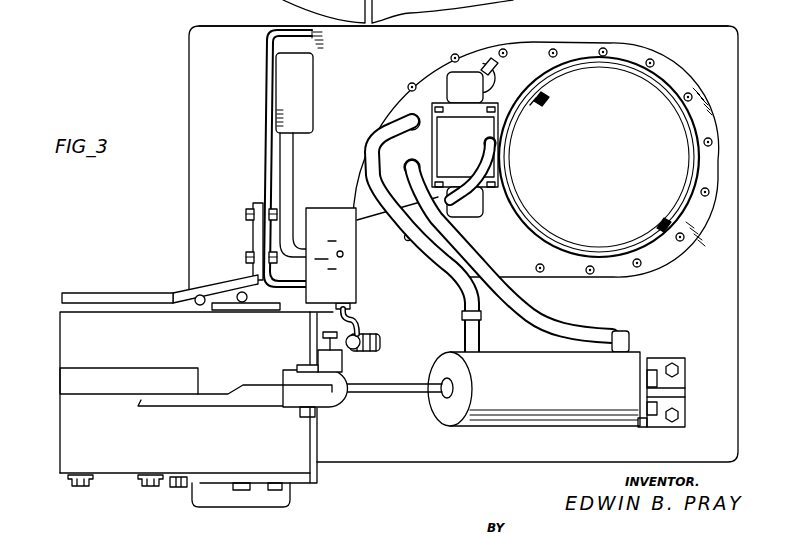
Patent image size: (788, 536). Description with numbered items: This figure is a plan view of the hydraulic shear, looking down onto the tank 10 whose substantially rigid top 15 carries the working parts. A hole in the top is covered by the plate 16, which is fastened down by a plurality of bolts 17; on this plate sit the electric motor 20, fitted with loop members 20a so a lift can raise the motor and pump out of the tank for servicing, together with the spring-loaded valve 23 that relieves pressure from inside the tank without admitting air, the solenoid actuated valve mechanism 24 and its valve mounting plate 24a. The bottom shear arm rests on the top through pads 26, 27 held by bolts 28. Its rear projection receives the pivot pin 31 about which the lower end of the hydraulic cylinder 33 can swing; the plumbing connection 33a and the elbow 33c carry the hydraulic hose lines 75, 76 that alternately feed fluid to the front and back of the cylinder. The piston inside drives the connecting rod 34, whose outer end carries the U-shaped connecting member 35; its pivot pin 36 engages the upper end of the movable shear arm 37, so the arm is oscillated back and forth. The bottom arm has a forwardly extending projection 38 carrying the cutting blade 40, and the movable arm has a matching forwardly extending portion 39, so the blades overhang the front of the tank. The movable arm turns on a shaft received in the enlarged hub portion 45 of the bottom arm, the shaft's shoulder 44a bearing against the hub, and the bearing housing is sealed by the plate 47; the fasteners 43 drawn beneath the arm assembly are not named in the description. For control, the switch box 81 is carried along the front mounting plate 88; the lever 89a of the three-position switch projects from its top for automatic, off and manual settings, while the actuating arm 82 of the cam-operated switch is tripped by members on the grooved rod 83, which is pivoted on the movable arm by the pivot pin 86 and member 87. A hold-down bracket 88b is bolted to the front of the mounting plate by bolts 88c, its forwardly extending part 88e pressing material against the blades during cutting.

The tank 10 is at (707, 43).
The top 15 is at (370, 74).
The plate 16 is at (533, 50).
The bolts 17 is at (650, 60).
The electric motor 20 is at (614, 156).
The loop members 20a is at (549, 98).
The spring-loaded valve 23 is at (466, 60).
The solenoid actuated valve mechanism 24 is at (472, 153).
The valve mounting plate 24a is at (404, 110).
The pad 26 is at (655, 361).
The pad 27 is at (222, 294).
The bolts 28 is at (686, 400).
The pivot pin 31 is at (645, 426).
The hydraulic cylinder 33 is at (520, 412).
The plumbing connection 33a is at (462, 319).
The elbow 33c is at (622, 336).
The connecting rod 34 is at (388, 396).
The U-shaped connecting member 35 is at (338, 408).
The pivot pin 36 is at (304, 419).
The movable shear arm 37 is at (238, 413).
The forwardly extending projection 38 is at (70, 336).
The forwardly extending portion 39 is at (70, 433).
The cutting blade 40 is at (70, 379).
The bolts 43 is at (143, 489).
The shoulder 44a is at (262, 311).
The enlarged hub portion 45 is at (243, 362).
The plate 47 is at (222, 498).
The hydraulic hose line 75 is at (364, 151).
The hydraulic hose line 76 is at (481, 261).
The switch box 81 is at (334, 213).
The actuating arm 82 is at (358, 315).
The grooved rod 83 is at (356, 349).
The pivot pin 86 is at (323, 333).
The member 87 is at (325, 358).
The front mounting plate 88 is at (262, 132).
The hold-down bracket 88b is at (255, 238).
The bolts 88c is at (250, 209).
The forwardly extending part 88e is at (115, 292).
The lever 89a is at (345, 256).